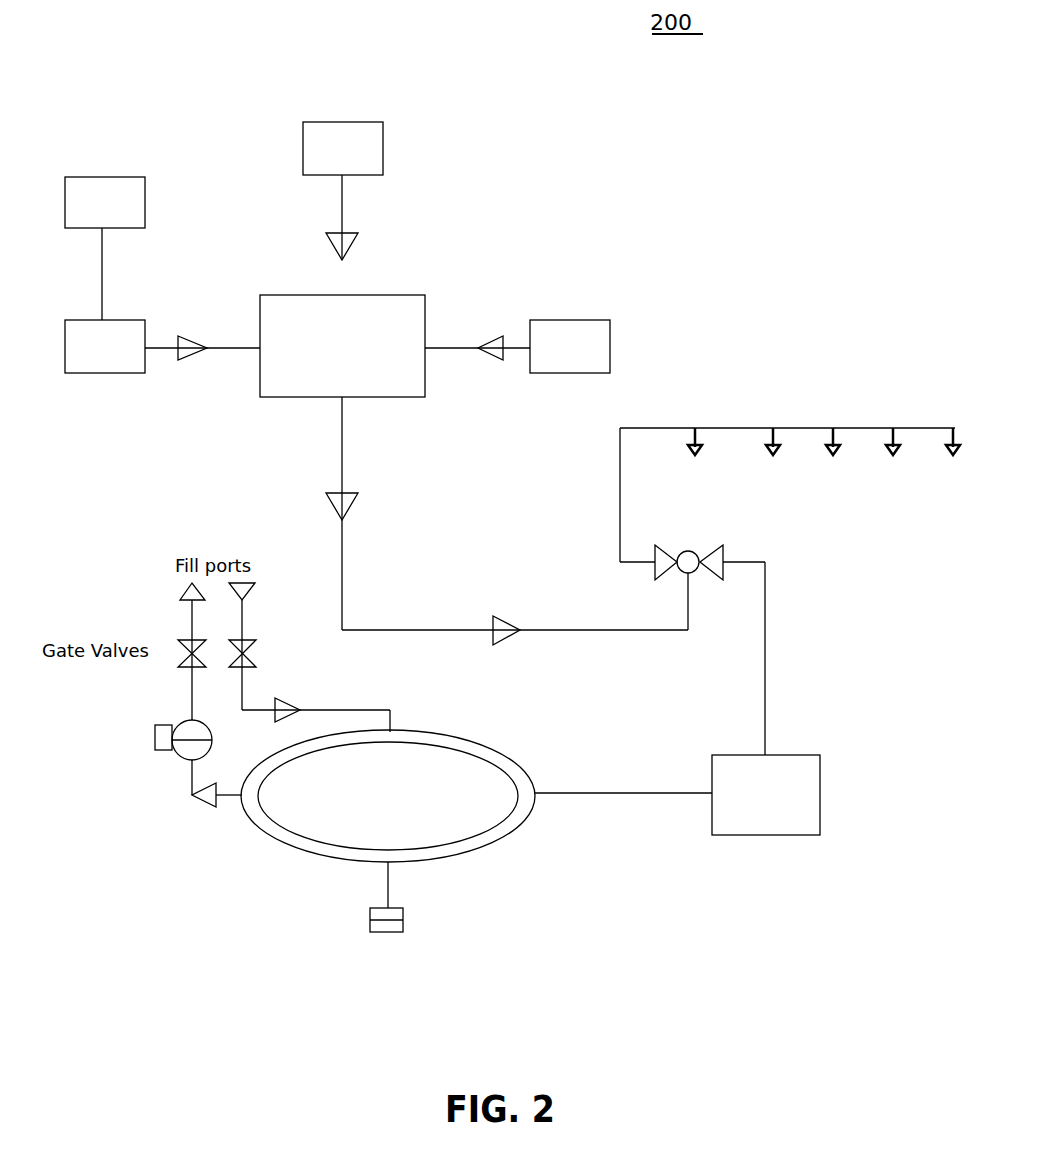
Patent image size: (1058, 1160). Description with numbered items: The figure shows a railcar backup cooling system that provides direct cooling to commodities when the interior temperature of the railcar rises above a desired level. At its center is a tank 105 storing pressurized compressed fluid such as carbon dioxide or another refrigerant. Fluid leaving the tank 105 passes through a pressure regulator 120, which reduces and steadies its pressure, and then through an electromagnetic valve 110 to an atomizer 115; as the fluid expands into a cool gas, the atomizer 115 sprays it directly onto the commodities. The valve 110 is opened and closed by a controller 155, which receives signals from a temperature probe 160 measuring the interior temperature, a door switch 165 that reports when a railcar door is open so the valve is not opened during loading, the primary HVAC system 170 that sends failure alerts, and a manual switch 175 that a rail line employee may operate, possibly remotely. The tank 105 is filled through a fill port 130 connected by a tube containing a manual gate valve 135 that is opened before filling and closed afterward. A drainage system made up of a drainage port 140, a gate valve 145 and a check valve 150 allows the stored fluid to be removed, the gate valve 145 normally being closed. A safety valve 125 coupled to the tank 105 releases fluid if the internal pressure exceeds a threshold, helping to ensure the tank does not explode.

The tank 105 is at (470, 735).
The electromagnetic valve 110 is at (695, 575).
The atomizer 115 is at (745, 428).
The pressure regulator 120 is at (820, 782).
The safety valve 125 is at (393, 905).
The fill port 130 is at (255, 595).
The gate valve 135 is at (258, 655).
The drainage port 140 is at (180, 585).
The gate valve 145 is at (178, 660).
The check valve 150 is at (186, 760).
The controller 155 is at (395, 295).
The temperature probe 160 is at (575, 320).
The door switch 165 is at (345, 122).
The primary HVAC system 170 is at (100, 177).
The manual switch 175 is at (100, 373).